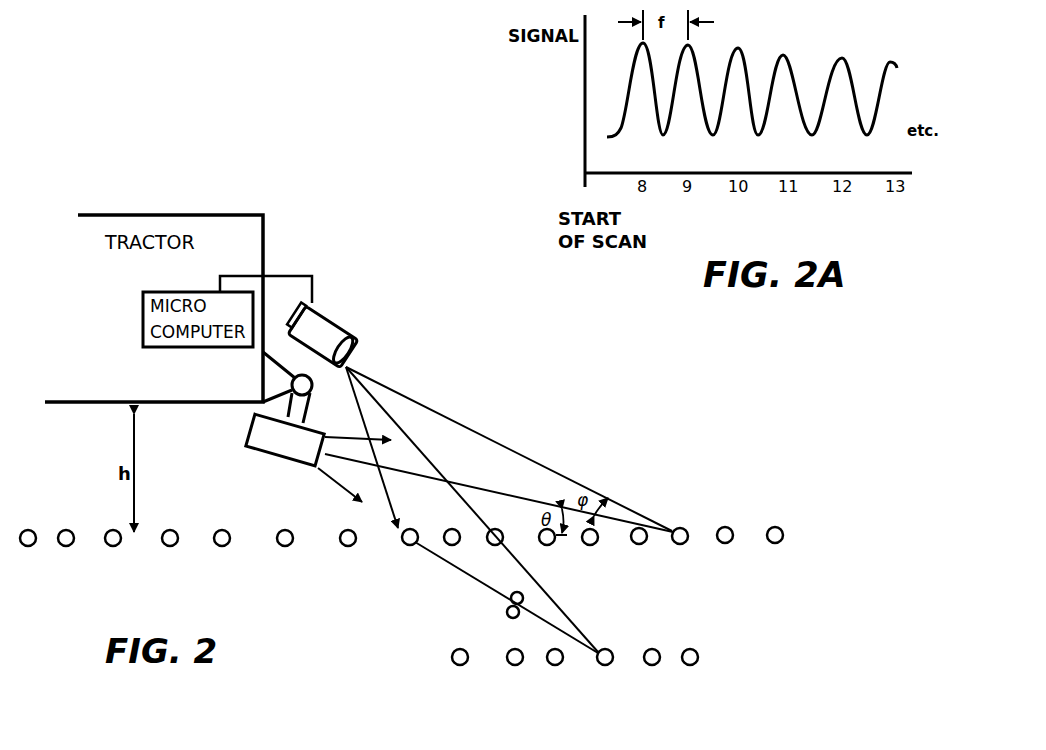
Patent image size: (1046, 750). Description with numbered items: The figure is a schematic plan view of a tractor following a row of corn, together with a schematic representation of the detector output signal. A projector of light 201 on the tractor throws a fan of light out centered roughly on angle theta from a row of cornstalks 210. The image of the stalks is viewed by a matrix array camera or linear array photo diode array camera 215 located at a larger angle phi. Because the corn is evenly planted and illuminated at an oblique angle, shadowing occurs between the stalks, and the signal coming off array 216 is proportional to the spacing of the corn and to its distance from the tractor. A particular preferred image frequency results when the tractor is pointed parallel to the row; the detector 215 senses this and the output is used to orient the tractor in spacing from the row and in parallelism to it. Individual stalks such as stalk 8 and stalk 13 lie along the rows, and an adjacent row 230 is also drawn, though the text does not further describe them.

The light source 201 is at (255, 438).
The camera 215 is at (342, 318).
The camera lens 216 is at (311, 308).
The row of plant stalks 210 is at (730, 540).
The adjacent row of plant stalks 230 is at (453, 660).
The stalk 8 is at (404, 544).
The stalk 13 is at (600, 666).